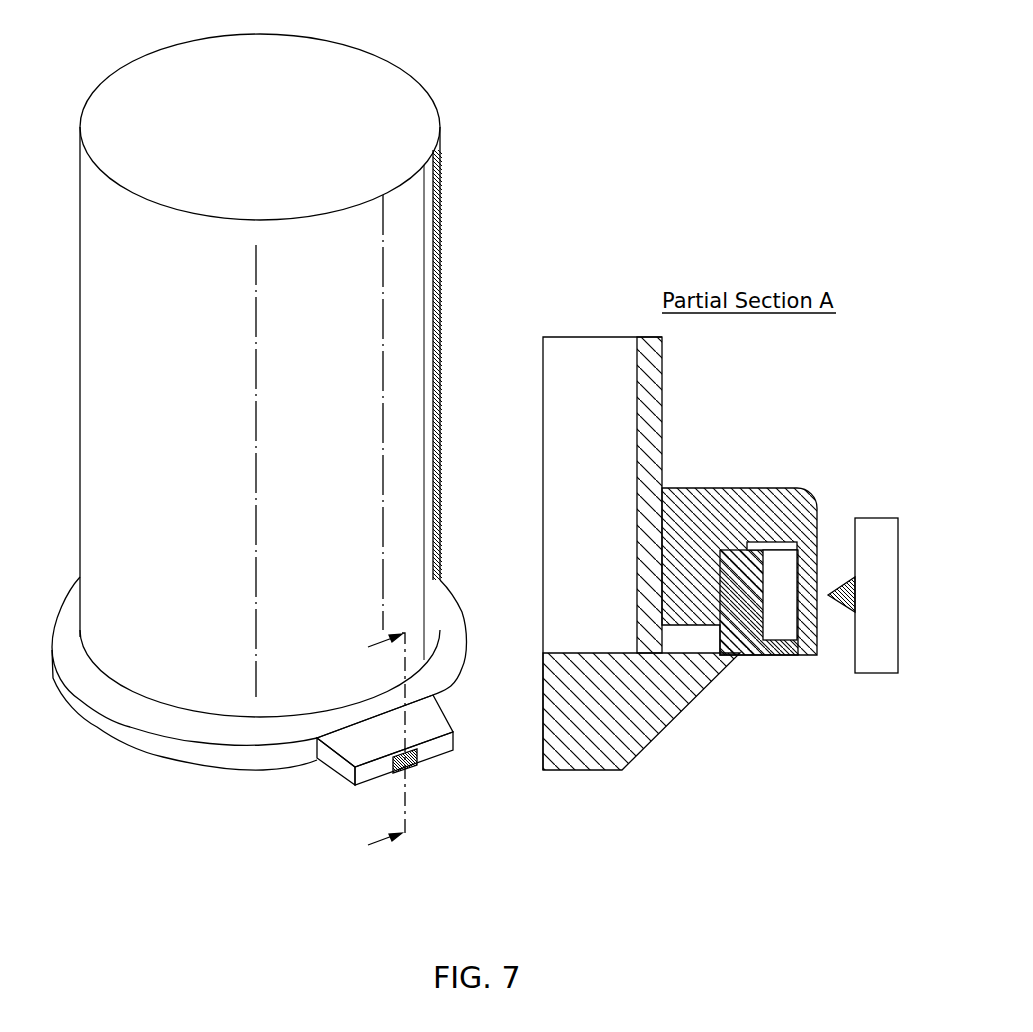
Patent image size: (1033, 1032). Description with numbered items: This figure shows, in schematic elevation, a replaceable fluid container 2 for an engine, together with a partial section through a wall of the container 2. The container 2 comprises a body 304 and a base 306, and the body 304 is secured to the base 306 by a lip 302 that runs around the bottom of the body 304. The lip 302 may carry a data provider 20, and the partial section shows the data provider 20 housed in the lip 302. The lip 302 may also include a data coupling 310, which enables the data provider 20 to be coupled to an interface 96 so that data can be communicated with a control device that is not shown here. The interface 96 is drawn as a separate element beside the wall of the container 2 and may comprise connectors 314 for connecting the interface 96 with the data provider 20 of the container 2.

The container 2 is at (463, 217).
The body 304 is at (279, 420).
The base 306 is at (114, 763).
The lip 302 is at (188, 755).
The data coupling 310 is at (417, 755).
The data provider 20 is at (778, 633).
The interface 96 is at (887, 602).
The connectors 314 is at (833, 614).